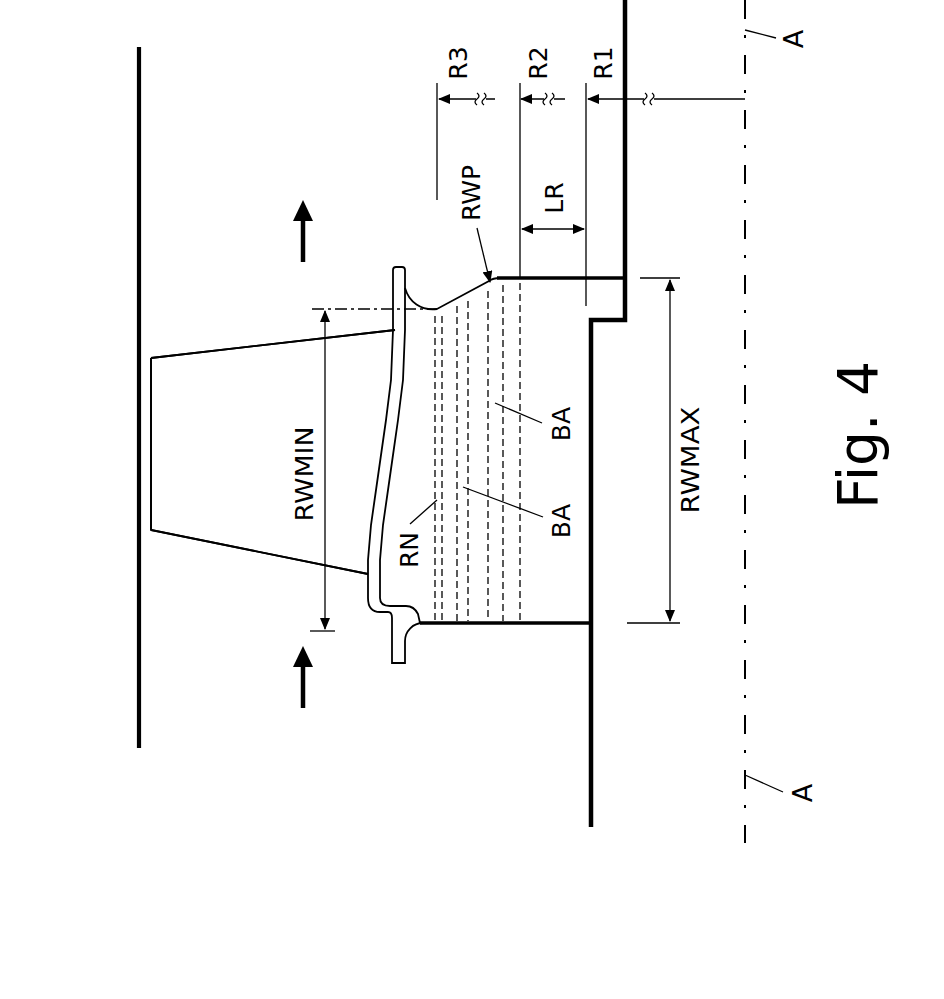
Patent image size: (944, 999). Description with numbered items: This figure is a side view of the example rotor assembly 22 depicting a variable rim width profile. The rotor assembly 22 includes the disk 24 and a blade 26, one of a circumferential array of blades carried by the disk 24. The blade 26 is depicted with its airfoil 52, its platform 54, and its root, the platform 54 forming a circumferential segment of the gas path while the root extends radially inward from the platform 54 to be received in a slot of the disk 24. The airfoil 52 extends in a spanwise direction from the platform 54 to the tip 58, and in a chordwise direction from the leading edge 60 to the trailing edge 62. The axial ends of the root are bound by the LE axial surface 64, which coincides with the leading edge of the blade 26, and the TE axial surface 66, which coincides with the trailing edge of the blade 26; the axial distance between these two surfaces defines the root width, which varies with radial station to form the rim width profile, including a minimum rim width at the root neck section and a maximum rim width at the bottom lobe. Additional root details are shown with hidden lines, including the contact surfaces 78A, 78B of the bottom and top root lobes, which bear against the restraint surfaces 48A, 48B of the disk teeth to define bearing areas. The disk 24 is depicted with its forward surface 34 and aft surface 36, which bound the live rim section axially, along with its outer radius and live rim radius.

The rotor assembly 22 is at (98, 758).
The disk 24 is at (477, 435).
The blade 26 is at (225, 541).
The forward surface 34 is at (418, 686).
The aft surface 36 is at (439, 230).
The restraint surface 48A is at (534, 537).
The restraint surface 48B is at (487, 546).
The airfoil 52 is at (225, 440).
The platform 54 is at (382, 446).
The tip 58 is at (150, 463).
The leading edge 60 is at (213, 547).
The trailing edge 62 is at (230, 347).
The LE axial surface 64 is at (462, 624).
The TE axial surface 66 is at (462, 297).
The contact surface 78A is at (497, 593).
The contact surface 78B is at (463, 607).